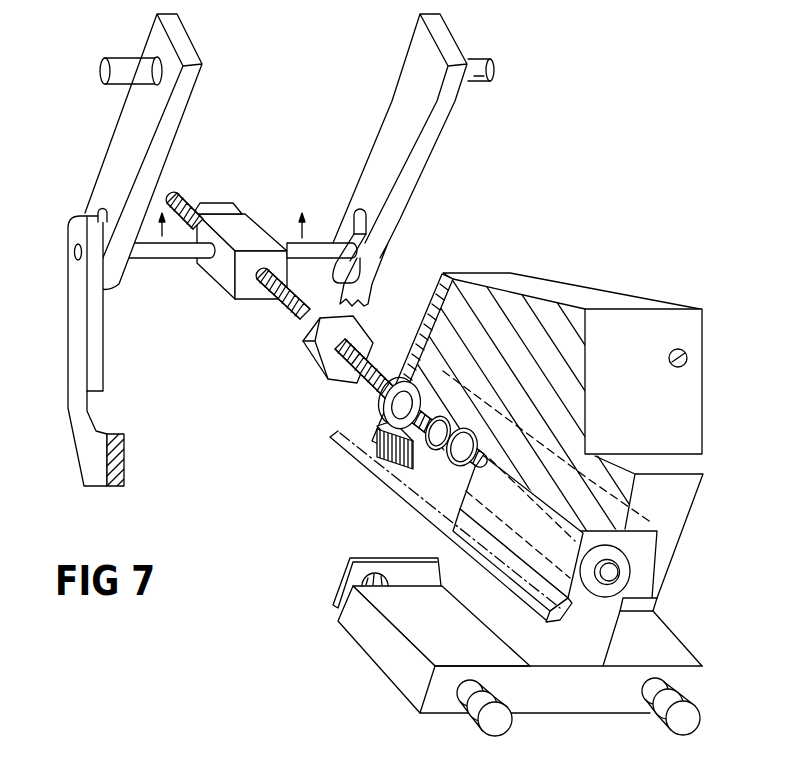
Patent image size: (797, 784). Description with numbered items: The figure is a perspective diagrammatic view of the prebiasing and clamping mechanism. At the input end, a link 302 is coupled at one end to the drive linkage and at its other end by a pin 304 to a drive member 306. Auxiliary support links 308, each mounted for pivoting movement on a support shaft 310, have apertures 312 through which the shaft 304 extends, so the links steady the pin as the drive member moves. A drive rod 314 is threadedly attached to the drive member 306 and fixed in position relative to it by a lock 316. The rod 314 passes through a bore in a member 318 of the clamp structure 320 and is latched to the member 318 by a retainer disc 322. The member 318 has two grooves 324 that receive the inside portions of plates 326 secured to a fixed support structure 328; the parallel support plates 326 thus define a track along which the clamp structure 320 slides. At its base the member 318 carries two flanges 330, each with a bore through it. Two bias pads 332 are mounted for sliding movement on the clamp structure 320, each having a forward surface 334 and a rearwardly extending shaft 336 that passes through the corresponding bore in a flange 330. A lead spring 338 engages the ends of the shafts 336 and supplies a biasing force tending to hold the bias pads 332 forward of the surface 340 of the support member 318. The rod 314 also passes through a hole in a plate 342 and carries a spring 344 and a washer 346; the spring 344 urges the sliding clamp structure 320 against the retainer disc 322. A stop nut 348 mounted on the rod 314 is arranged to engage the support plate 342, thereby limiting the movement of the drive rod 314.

The link 302 is at (88, 459).
The pin 304 is at (147, 261).
The drive member 306 is at (218, 289).
The auxiliary support links 308 is at (163, 147).
The support shaft 310 is at (117, 63).
The apertures 312 is at (101, 212).
The drive rod 314 is at (293, 318).
The lock 316 is at (222, 198).
The member 318 is at (466, 498).
The clamp structure 320 is at (316, 542).
The retainer disc 322 is at (623, 558).
The grooves 324 is at (618, 617).
The plates 326 is at (647, 603).
The fixed support structure 328 is at (598, 283).
The flanges 330 is at (353, 636).
The bias pads 332 is at (707, 696).
The forward surface 334 is at (495, 727).
The shaft 336 is at (375, 575).
The lead spring 338 is at (422, 556).
The surface 340 is at (438, 703).
The plate 342 is at (442, 272).
The spring 344 is at (439, 460).
The washer 346 is at (383, 407).
The stop nut 348 is at (313, 368).